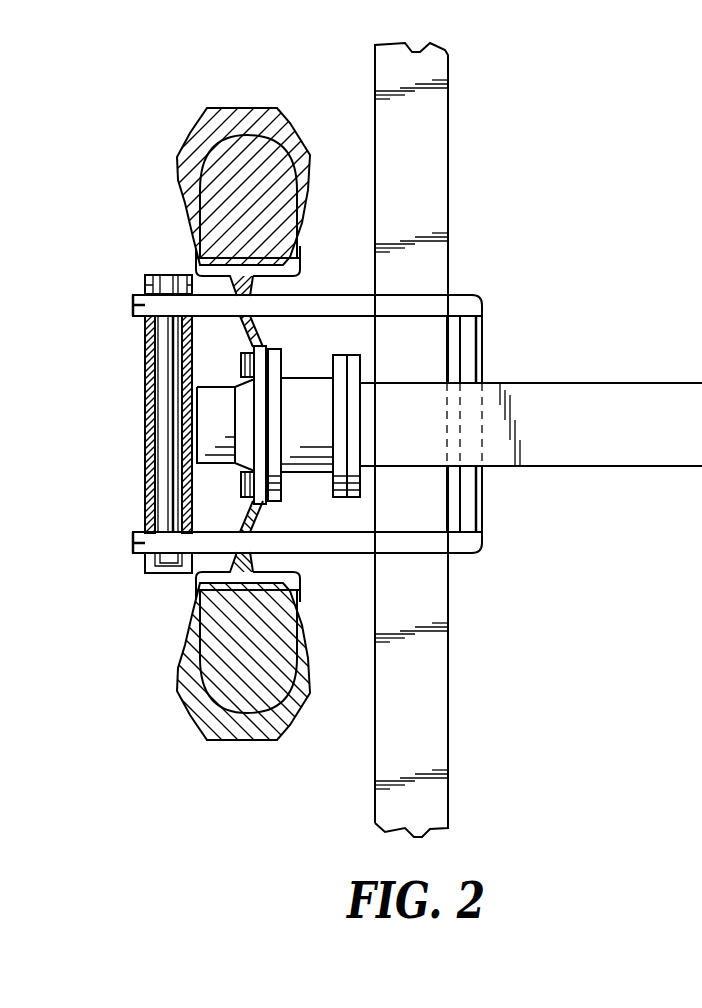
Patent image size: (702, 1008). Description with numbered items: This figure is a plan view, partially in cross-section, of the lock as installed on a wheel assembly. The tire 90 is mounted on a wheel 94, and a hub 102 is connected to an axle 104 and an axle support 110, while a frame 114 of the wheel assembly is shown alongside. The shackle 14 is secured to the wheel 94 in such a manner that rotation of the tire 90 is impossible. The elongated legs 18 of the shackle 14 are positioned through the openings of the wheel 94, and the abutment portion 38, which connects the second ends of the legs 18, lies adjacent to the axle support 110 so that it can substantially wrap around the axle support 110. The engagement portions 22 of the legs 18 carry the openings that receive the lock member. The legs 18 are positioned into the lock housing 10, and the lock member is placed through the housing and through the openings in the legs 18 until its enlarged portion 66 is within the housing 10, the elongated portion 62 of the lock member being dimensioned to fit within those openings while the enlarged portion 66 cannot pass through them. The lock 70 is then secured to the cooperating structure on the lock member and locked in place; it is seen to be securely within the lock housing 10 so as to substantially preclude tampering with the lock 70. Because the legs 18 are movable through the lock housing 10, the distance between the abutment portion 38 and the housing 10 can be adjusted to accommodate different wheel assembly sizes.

The lock housing 10 is at (147, 460).
The shackle 14 is at (317, 426).
The legs 18 is at (327, 300).
The engagement portions 22 is at (140, 308).
The abutment portion 38 is at (472, 343).
The elongated portion 62 is at (167, 362).
The enlarged portion 66 is at (162, 568).
The lock 70 is at (163, 276).
The tire 90 is at (198, 136).
The wheel 94 is at (186, 252).
The hub 102 is at (208, 417).
The axle 104 is at (296, 377).
The axle support 110 is at (637, 398).
The frame 114 is at (437, 108).